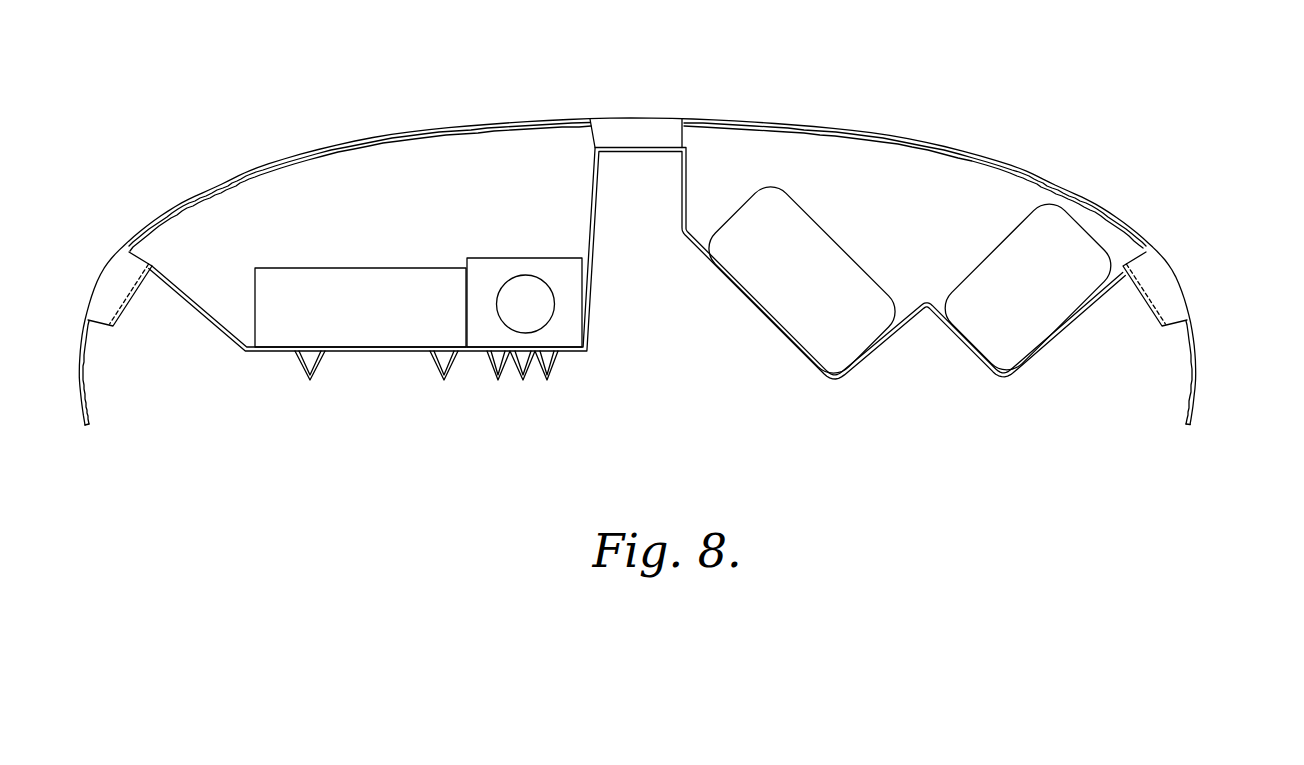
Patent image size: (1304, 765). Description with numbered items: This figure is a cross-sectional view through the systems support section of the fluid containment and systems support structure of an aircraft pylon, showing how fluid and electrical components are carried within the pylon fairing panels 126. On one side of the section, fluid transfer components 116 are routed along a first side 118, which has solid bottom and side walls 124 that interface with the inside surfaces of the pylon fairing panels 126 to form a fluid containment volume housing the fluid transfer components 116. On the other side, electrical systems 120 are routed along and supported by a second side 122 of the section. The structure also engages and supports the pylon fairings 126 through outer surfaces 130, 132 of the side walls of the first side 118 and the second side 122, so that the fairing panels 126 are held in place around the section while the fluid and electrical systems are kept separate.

The fluid transfer components 116 is at (350, 282).
The first side 118 is at (472, 152).
The electrical systems 120 is at (1003, 270).
The second side 122 is at (747, 148).
The solid bottom and side walls 124 is at (283, 353).
The pylon fairing panels 126 is at (245, 171).
The outer surface of side wall of the first side 130 is at (116, 286).
The outer surface of side wall of the second side 132 is at (1159, 286).